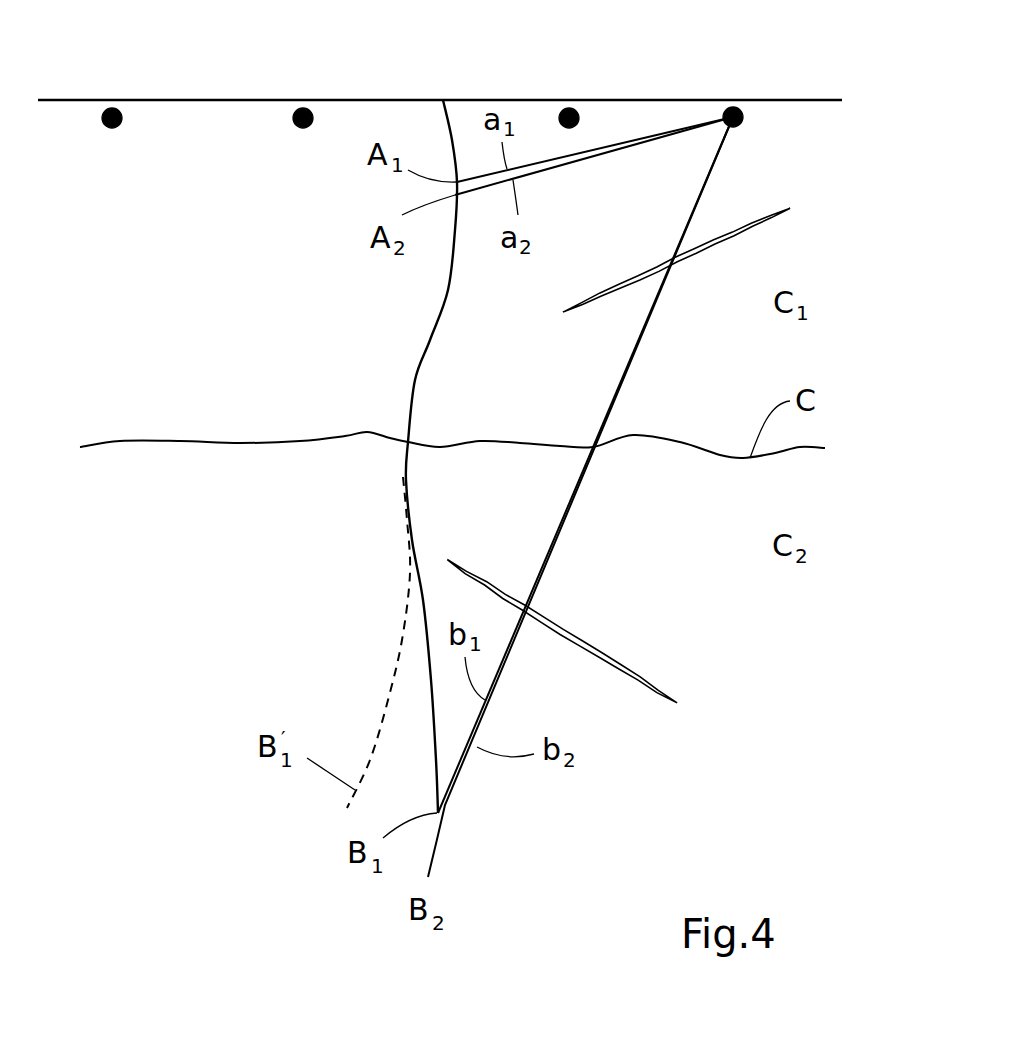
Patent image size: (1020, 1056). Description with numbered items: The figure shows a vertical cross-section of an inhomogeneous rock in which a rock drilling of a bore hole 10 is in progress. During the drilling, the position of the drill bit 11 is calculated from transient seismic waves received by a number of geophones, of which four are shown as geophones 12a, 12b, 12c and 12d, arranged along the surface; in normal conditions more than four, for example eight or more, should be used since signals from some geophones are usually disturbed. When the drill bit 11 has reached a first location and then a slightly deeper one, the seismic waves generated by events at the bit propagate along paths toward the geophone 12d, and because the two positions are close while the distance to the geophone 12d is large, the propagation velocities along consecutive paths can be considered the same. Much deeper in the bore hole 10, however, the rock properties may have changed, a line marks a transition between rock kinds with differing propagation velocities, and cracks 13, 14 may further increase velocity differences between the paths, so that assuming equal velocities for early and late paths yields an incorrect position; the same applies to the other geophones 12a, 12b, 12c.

The bore hole 10 is at (403, 487).
The drill bit 11 is at (437, 813).
The geophone 12a is at (117, 108).
The geophone 12b is at (308, 108).
The geophone 12c is at (573, 108).
The geophone 12d is at (738, 108).
The crack 13 is at (653, 685).
The crack 14 is at (747, 222).